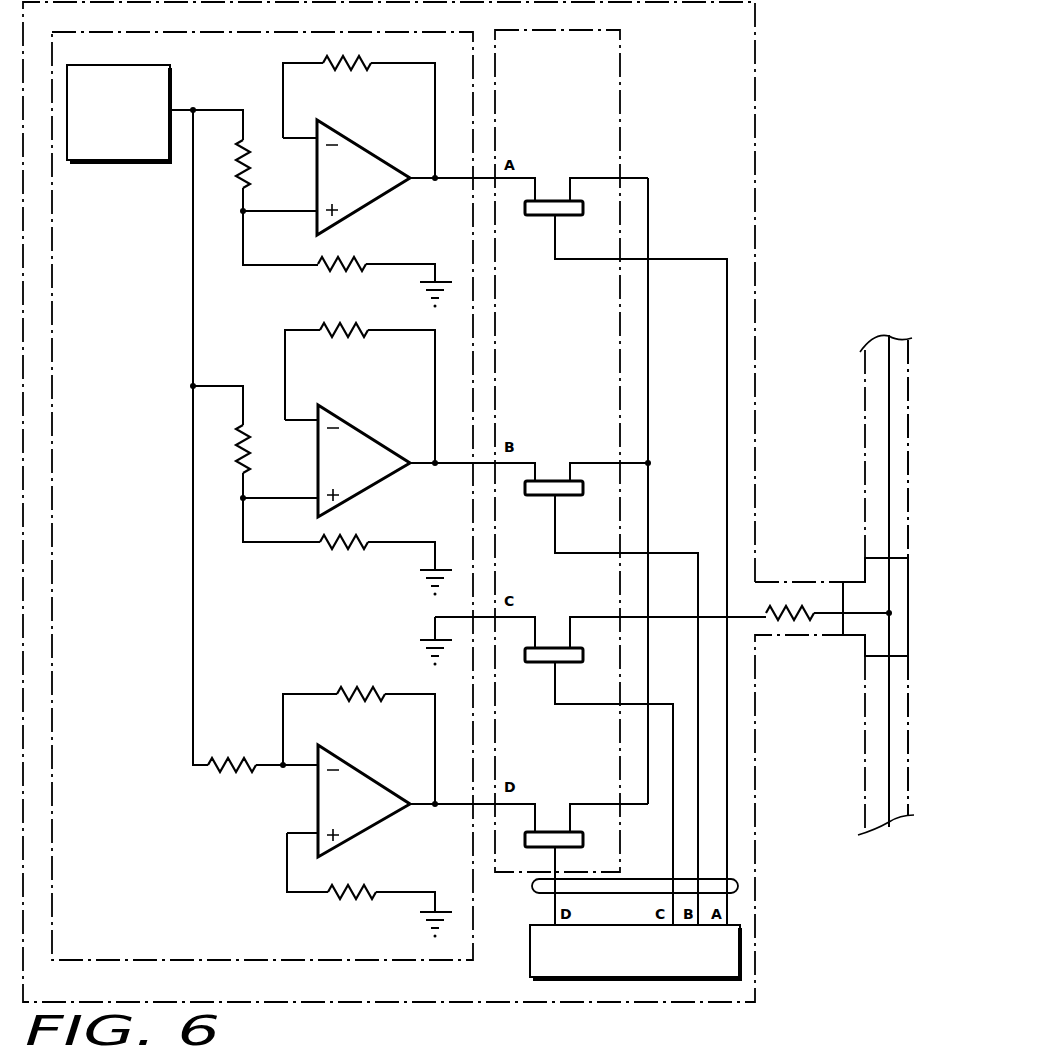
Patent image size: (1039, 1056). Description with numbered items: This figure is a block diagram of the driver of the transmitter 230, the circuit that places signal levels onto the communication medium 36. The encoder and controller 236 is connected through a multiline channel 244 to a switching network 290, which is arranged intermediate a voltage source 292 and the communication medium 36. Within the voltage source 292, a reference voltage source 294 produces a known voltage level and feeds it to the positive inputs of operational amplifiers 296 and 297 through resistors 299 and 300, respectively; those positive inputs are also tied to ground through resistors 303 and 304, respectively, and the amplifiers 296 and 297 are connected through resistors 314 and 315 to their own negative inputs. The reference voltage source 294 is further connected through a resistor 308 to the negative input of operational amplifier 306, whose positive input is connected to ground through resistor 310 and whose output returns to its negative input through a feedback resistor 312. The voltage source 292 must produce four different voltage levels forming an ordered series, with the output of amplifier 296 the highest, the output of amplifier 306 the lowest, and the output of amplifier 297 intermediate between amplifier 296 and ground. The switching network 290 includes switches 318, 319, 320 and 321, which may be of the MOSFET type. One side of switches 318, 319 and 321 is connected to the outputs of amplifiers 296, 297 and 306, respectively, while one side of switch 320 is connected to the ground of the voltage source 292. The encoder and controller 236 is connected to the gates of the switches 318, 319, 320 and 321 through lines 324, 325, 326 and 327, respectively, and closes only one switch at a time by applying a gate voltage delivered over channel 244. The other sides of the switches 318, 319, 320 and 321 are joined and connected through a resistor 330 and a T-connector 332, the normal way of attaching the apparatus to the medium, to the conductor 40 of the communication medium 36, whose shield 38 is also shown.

The transmitter 230 is at (770, 97).
The voltage source 292 is at (158, 32).
The switching network 290 is at (620, 58).
The reference voltage source 294 is at (174, 72).
The resistor 299 is at (248, 186).
The resistor 300 is at (249, 449).
The resistor 314 is at (350, 72).
The resistor 303 is at (360, 262).
The resistor 315 is at (349, 338).
The resistor 304 is at (360, 541).
The feedback resistor 312 is at (370, 702).
The resistor 310 is at (368, 890).
The resistor 308 is at (244, 773).
The resistor 330 is at (792, 610).
The operational amplifier 296 is at (345, 141).
The operational amplifier 297 is at (350, 426).
The operational amplifier 306 is at (360, 766).
The switch 318 is at (560, 218).
The switch 319 is at (560, 498).
The switch 320 is at (561, 665).
The switch 321 is at (567, 850).
The line 324 is at (727, 393).
The line 325 is at (666, 552).
The line 326 is at (657, 703).
The line 327 is at (565, 895).
The multiline channel 244 is at (540, 898).
The encoder and controller 236 is at (530, 956).
The communication medium 36 is at (852, 572).
The shield 38 is at (908, 365).
The conductor 40 is at (889, 445).
The T-connector 332 is at (862, 648).